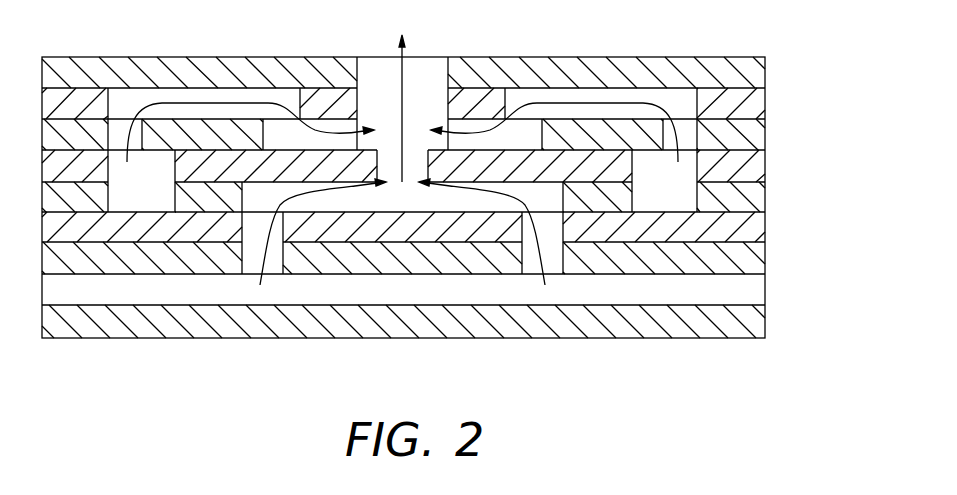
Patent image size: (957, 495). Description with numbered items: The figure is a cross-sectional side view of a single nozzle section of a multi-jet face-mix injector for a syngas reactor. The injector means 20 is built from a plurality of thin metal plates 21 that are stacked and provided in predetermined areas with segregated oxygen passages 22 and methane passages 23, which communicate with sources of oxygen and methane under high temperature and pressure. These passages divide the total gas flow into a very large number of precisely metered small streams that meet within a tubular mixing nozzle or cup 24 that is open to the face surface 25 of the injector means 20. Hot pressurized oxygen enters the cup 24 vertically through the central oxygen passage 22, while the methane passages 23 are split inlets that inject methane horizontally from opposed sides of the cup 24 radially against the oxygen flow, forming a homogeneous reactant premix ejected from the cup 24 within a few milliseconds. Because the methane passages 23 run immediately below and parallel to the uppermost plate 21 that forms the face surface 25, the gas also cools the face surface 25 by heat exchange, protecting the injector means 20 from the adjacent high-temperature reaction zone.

The injector means 20 is at (747, 57).
The thin metal plates 21 is at (766, 320).
The oxygen passages 22 is at (392, 198).
The methane passages 23 is at (303, 127).
The mixing nozzle or cup 24 is at (410, 70).
The face surface 25 is at (478, 57).